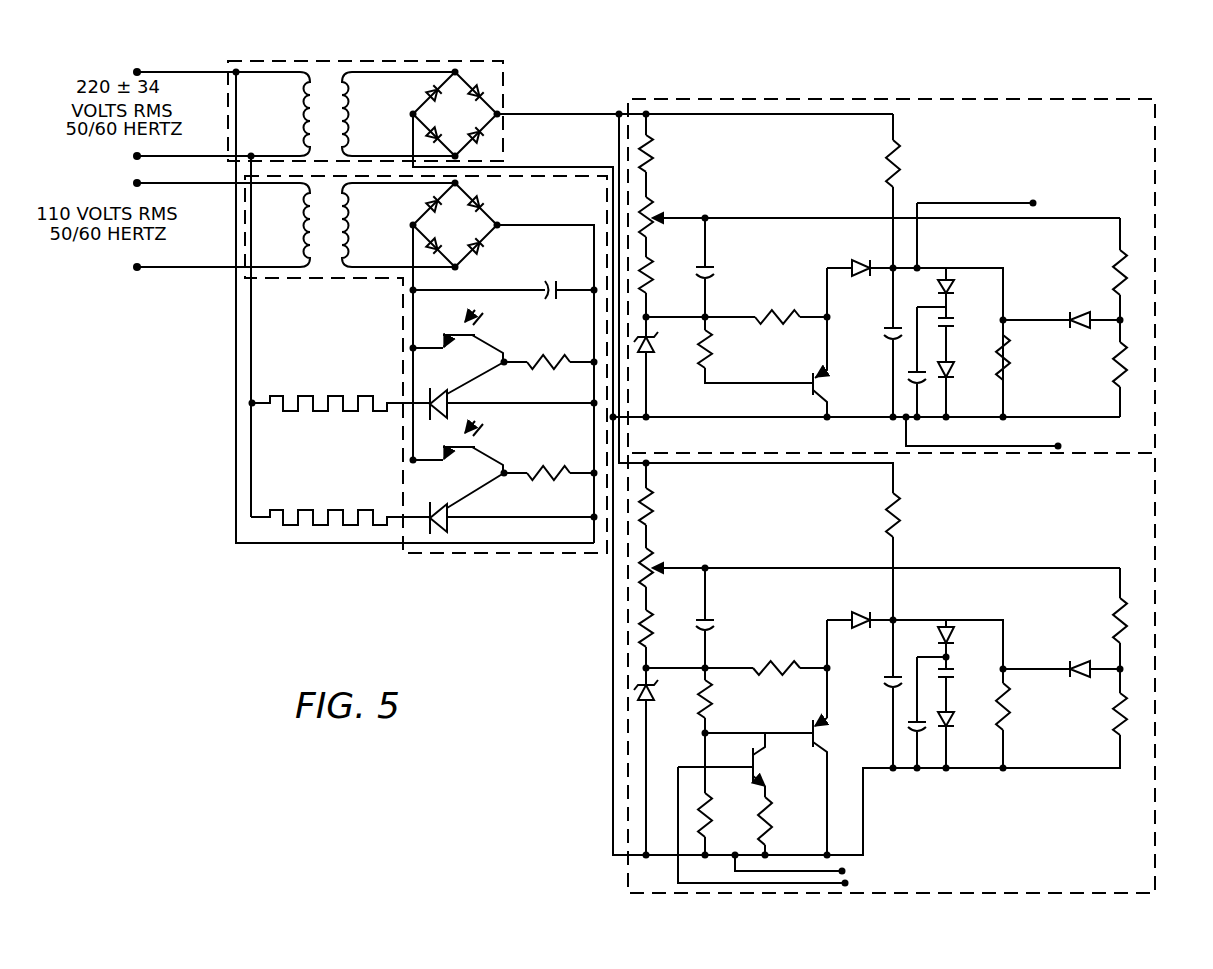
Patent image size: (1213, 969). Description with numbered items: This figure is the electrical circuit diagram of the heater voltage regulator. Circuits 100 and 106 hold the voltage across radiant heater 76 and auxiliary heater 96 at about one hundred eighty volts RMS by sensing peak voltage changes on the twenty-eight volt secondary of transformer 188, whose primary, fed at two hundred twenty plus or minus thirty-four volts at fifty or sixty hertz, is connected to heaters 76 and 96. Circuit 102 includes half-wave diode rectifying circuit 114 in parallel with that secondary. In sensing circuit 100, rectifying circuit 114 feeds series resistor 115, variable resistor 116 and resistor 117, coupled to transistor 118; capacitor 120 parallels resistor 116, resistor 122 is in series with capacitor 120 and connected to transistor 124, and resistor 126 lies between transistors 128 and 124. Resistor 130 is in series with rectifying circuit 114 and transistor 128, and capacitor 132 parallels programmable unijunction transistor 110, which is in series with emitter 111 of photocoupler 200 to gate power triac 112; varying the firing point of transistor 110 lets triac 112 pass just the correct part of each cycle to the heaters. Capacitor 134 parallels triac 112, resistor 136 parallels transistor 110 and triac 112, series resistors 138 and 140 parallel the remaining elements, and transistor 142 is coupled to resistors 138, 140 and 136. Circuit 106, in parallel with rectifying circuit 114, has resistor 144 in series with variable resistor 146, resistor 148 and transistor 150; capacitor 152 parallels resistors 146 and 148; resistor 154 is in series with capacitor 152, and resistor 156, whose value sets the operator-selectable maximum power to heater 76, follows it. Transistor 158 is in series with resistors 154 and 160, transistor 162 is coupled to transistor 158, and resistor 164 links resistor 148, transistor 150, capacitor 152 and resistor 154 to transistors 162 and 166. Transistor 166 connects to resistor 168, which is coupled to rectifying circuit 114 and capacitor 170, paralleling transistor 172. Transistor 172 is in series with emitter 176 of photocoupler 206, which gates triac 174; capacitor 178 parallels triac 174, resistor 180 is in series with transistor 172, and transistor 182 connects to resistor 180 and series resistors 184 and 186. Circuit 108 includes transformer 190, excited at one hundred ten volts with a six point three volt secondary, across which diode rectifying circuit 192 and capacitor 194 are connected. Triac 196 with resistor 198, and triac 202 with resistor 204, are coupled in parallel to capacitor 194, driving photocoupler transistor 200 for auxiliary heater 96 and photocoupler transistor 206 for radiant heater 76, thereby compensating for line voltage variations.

The radiant heater 76 is at (322, 510).
The auxiliary heater 96 is at (322, 396).
The sensing circuit 100 is at (942, 96).
The circuit 102 is at (399, 57).
The circuit 106 is at (626, 874).
The circuit 108 is at (477, 563).
The programmable unijunction transistor 110 is at (953, 288).
The emitter of photocoupler 111 is at (950, 320).
The power triac 112 is at (960, 375).
The half-wave diode rectifying circuit 114 is at (490, 104).
The resistor 115 is at (655, 160).
The variable resistor 116 is at (655, 290).
The resistor 117 is at (659, 204).
The transistor 118 is at (655, 352).
The capacitor 120 is at (713, 277).
The resistor 122 is at (712, 356).
The transistor 124 is at (822, 387).
The resistor 126 is at (777, 313).
The transistor 128 is at (865, 262).
The resistor 130 is at (902, 176).
The capacitor 132 is at (886, 333).
The capacitor 134 is at (910, 387).
The resistor 136 is at (1012, 362).
The resistor 138 is at (1130, 276).
The resistor 140 is at (1130, 362).
The transistor 142 is at (1082, 313).
The resistor 144 is at (656, 509).
The variable resistor 146 is at (659, 560).
The resistor 148 is at (640, 632).
The transistor 150 is at (640, 693).
The capacitor 152 is at (715, 621).
The resistor 154 is at (715, 708).
The resistor 156 is at (712, 818).
The transistor 158 is at (751, 762).
The resistor 160 is at (780, 820).
The transistor 162 is at (828, 742).
The resistor 164 is at (780, 662).
The transistor 166 is at (865, 615).
The resistor 168 is at (902, 518).
The capacitor 170 is at (888, 681).
The transistor 172 is at (948, 625).
The triac 174 is at (955, 720).
The emitter of photocoupler 176 is at (952, 677).
The capacitor 178 is at (905, 722).
The resistor 180 is at (1012, 710).
The transistor 182 is at (1082, 664).
The resistor 184 is at (1130, 626).
The resistor 186 is at (1130, 728).
The transformer 188 is at (327, 80).
The transformer 190 is at (318, 262).
The diode rectifying circuit 192 is at (490, 219).
The capacitor 194 is at (556, 284).
The triac 196 is at (478, 340).
The resistor 198 is at (556, 360).
The photocoupler transistor 200 is at (453, 397).
The triac 202 is at (478, 453).
The resistor 204 is at (554, 471).
The photocoupler transistor 206 is at (450, 525).